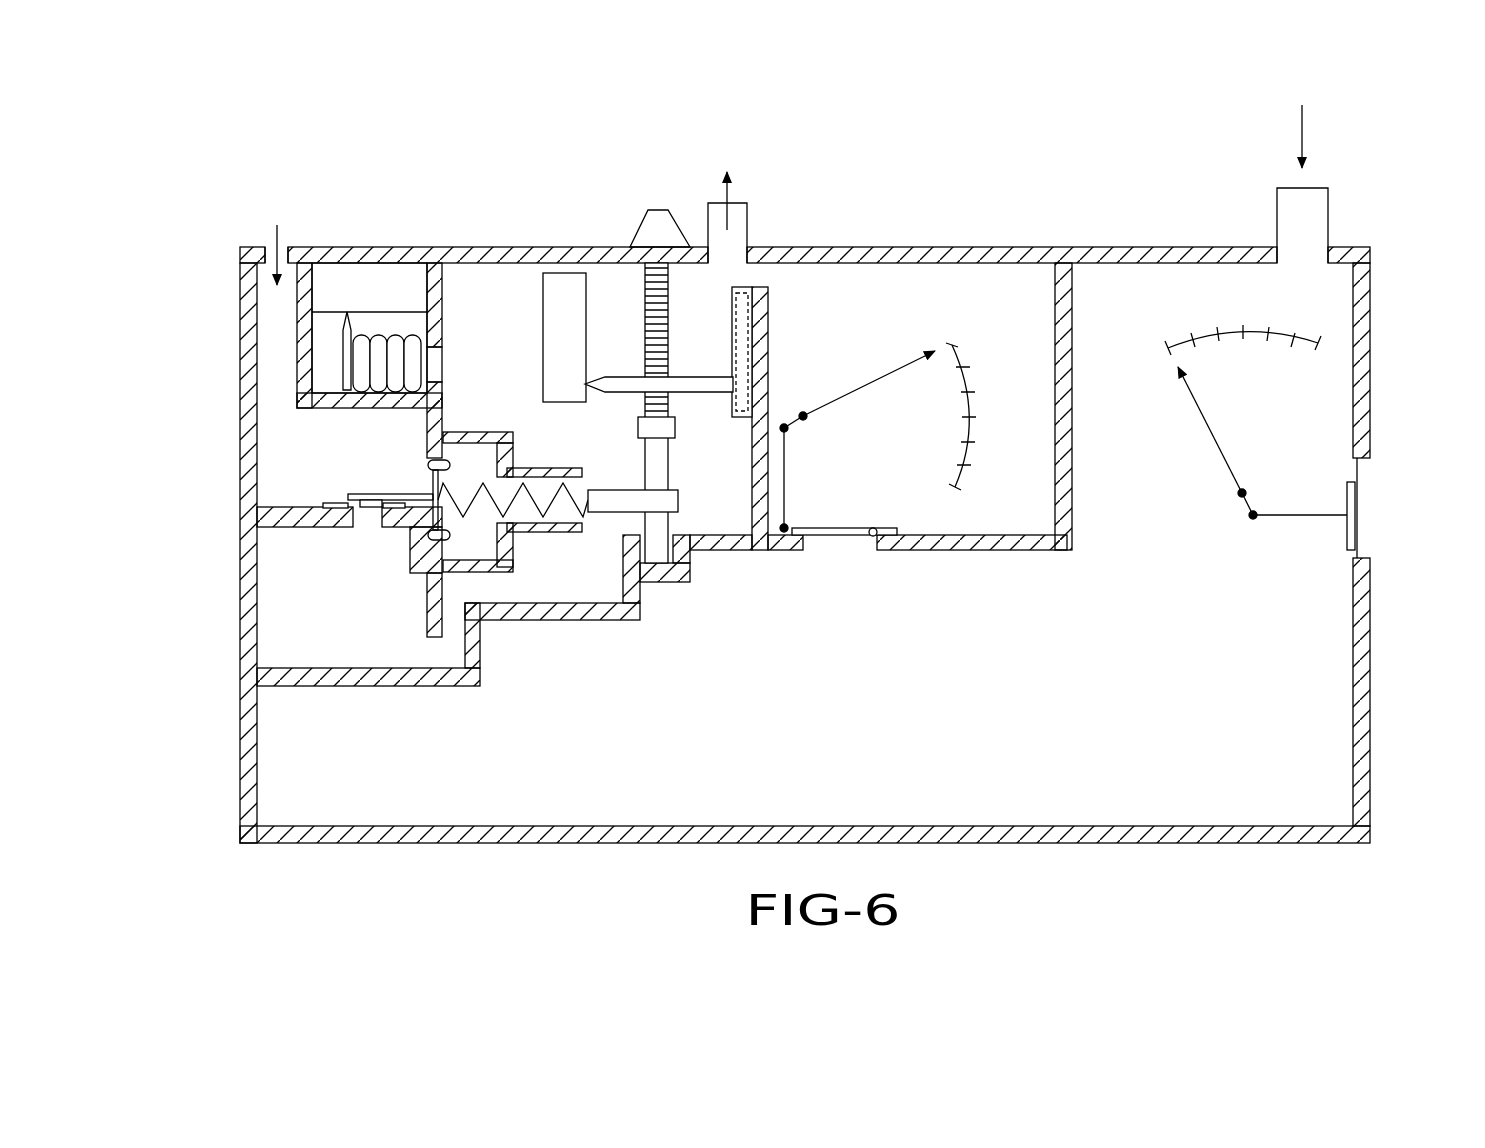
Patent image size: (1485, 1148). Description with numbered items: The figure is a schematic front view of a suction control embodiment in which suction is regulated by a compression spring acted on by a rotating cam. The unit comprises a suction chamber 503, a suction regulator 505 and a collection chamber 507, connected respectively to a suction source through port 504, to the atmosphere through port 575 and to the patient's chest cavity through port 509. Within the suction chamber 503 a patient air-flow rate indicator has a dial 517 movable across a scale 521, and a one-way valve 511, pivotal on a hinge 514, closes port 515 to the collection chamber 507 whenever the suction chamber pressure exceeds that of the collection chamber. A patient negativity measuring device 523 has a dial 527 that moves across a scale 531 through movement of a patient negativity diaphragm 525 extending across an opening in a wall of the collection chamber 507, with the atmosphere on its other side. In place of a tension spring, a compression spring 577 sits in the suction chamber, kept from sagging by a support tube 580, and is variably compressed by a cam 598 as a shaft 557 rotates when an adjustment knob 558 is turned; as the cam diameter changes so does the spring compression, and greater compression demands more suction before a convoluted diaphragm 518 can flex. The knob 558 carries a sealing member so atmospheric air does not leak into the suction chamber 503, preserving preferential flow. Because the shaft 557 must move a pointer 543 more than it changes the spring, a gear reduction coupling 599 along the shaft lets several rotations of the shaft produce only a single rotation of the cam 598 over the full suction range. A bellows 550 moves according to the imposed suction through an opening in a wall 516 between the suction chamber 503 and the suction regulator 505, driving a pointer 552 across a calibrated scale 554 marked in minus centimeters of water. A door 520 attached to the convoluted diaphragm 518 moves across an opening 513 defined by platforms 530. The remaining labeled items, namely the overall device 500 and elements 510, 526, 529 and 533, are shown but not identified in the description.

The pressure monitoring device 500 is at (200, 650).
The suction chamber 503 is at (795, 336).
The port 504 is at (748, 223).
The suction regulator 505 is at (290, 450).
The collection chamber 507 is at (925, 661).
The port 509 is at (1328, 213).
The pressure scale 510 is at (543, 330).
The one-way valve 511 is at (820, 537).
The opening 513 is at (372, 517).
The hinge 514 is at (877, 525).
The port 515 is at (850, 543).
The wall 516 is at (441, 300).
The dial 517 is at (873, 383).
The convoluted diaphragm 518 is at (423, 487).
The door 520 is at (358, 497).
The scale 521 is at (967, 382).
The patient negativity measuring device 523 is at (1168, 470).
The patient negativity diaphragm 525 is at (1358, 500).
The linkage rod 526 is at (1293, 517).
The dial 527 is at (1195, 405).
The pivot 529 is at (1242, 495).
The platforms 530 is at (337, 505).
The scale 531 is at (1203, 337).
The adjustment mechanism 533 is at (647, 183).
The pointer 543 is at (690, 377).
The bellows 550 is at (363, 355).
The pointer 552 is at (352, 328).
The calibrated scale 554 is at (347, 272).
The adjustment shaft 557 is at (645, 327).
The adjustment knob 558 is at (643, 214).
The port 575 is at (273, 248).
The compression spring 577 is at (463, 490).
The support tube 580 is at (527, 532).
The cam 598 is at (683, 500).
The gear reduction coupling 599 is at (652, 432).